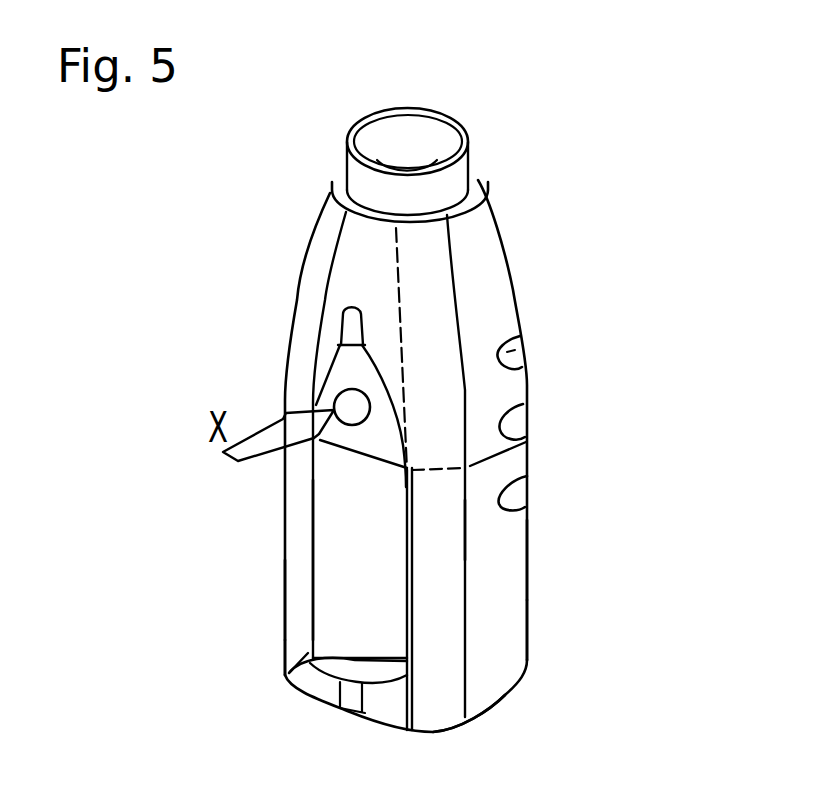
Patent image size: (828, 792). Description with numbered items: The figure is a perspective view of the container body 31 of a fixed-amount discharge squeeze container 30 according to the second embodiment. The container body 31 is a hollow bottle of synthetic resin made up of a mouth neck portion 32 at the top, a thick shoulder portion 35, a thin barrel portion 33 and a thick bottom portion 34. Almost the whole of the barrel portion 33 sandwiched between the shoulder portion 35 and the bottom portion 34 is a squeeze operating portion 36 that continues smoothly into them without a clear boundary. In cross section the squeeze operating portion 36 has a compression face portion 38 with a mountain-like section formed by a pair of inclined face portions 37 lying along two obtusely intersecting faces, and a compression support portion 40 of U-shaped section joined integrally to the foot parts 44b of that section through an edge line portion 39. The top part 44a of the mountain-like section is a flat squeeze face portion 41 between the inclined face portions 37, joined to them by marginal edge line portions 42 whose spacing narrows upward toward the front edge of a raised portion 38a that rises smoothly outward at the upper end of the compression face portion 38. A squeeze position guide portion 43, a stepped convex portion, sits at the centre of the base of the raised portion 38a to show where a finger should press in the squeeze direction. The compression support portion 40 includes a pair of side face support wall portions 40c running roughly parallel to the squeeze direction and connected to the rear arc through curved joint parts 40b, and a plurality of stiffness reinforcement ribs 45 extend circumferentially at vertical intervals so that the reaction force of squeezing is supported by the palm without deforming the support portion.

The fixed-amount discharge squeeze container 30 is at (298, 178).
The container body 31 is at (500, 217).
The mouth neck portion 32 is at (468, 156).
The barrel portion 33 is at (480, 395).
The bottom portion 34 is at (498, 698).
The shoulder portion 35 is at (438, 262).
The squeeze operating portion 36 is at (310, 485).
The inclined face portions 37 is at (442, 535).
The compression face portion 38 is at (318, 515).
The raised portion 38a is at (362, 362).
The edge line portion 39 is at (467, 618).
The compression support portion 40 is at (502, 403).
The curved joint part 40b is at (528, 502).
The side face support wall portions 40c is at (498, 575).
The squeeze face portion 41 is at (320, 557).
The marginal edge line portion 42 is at (286, 677).
The squeeze position guide portion 43 is at (344, 400).
The top part 44a is at (130, 600).
The foot parts 44b is at (393, 660).
The stiffness reinforcement ribs 45 is at (510, 350).